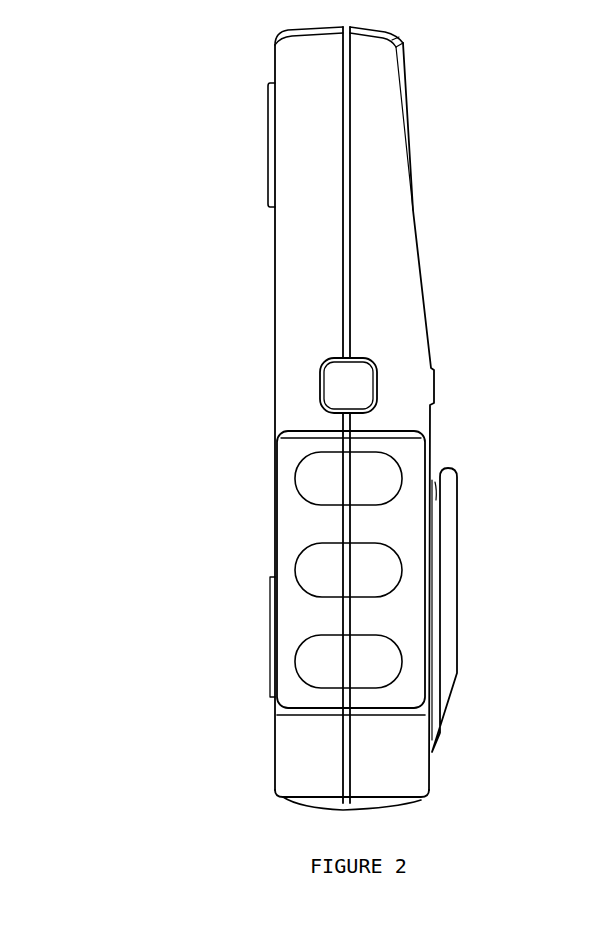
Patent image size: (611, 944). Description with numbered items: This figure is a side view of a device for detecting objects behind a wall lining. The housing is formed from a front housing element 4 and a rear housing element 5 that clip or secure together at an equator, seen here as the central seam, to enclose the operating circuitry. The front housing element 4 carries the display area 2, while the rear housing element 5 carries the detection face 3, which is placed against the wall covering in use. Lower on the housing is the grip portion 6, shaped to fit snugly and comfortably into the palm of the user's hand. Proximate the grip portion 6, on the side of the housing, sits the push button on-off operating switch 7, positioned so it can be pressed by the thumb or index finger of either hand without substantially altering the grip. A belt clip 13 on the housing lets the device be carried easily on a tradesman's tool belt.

The display area 2 is at (410, 120).
The detection face 3 is at (268, 168).
The front housing element 4 is at (388, 227).
The rear housing element 5 is at (308, 280).
The grip portion 6 is at (327, 577).
The push button on-off operating switch 7 is at (348, 383).
The belt clip 13 is at (445, 596).